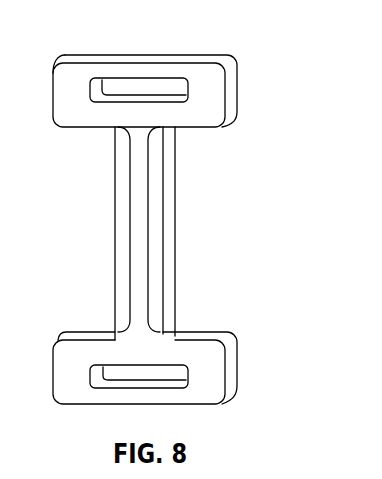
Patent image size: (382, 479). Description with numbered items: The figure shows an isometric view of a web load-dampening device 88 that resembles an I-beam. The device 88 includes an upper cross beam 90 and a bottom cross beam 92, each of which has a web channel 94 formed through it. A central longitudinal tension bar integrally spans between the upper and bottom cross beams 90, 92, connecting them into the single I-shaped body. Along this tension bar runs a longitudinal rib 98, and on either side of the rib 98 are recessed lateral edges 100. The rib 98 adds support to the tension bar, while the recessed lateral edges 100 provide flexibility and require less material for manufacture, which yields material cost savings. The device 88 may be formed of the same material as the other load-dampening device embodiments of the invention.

The web load-dampening device 88 is at (249, 41).
The upper cross beam 90 is at (82, 61).
The bottom cross beam 92 is at (233, 378).
The web channel 94 is at (128, 88).
The longitudinal rib 98 is at (140, 213).
The recessed lateral edge 100 is at (124, 208).